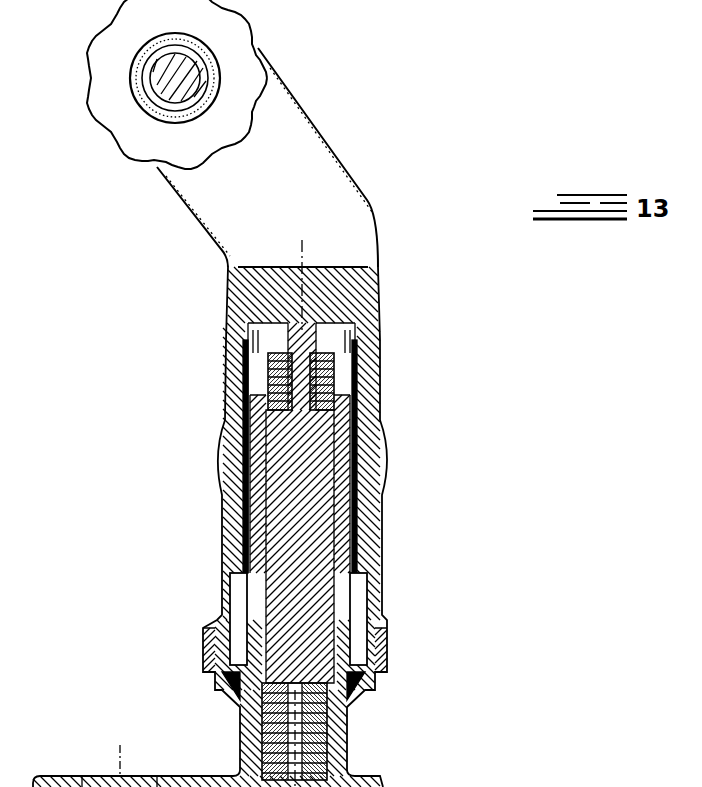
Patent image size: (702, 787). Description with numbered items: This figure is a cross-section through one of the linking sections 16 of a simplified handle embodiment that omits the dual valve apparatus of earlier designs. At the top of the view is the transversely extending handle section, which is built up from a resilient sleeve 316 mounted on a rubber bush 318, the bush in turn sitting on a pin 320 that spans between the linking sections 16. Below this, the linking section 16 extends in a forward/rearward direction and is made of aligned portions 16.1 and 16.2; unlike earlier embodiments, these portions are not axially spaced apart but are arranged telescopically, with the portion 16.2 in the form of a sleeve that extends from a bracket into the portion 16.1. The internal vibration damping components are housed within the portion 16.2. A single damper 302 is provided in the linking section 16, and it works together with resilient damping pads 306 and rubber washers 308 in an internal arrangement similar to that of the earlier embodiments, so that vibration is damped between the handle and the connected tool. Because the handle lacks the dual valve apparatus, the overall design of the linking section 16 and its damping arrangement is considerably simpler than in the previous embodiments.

The linking section 16 is at (404, 440).
The portion of linking section 16.1 is at (368, 503).
The portion of linking section 16.2 is at (343, 608).
The damper 302 is at (350, 532).
The resilient damping pads 306 is at (330, 725).
The rubber washers 308 is at (350, 374).
The resilient sleeve 316 is at (242, 47).
The rubber bush 318 is at (143, 97).
The pin 320 is at (152, 73).